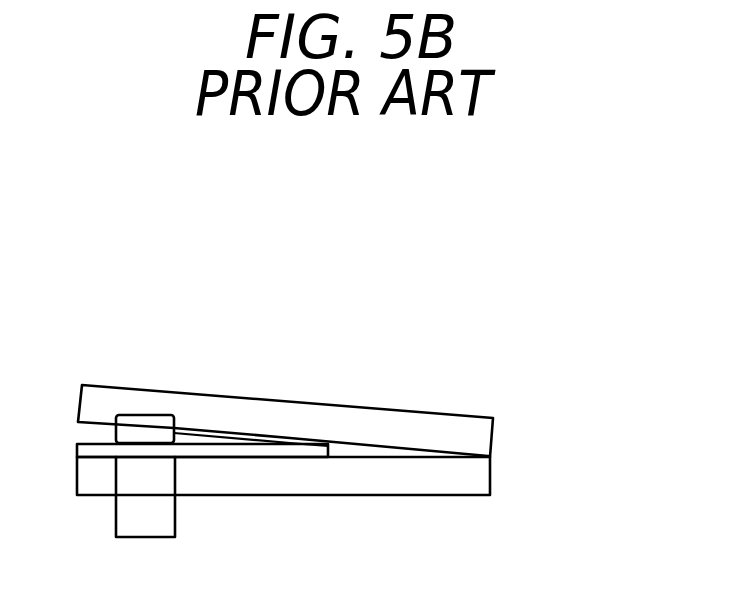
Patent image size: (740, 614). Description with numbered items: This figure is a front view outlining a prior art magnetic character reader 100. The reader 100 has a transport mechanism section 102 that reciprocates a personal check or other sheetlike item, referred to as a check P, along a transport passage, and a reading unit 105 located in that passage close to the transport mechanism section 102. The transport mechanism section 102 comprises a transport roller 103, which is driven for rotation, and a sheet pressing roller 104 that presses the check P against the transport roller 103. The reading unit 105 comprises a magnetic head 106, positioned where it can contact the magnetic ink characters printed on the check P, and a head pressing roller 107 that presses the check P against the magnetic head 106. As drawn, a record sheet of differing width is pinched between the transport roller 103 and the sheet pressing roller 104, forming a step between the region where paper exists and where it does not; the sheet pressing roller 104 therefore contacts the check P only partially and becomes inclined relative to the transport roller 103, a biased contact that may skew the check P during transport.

The magnetic character reader 100 is at (113, 188).
The transport mechanism section 102 is at (588, 390).
The transport roller 103 is at (480, 478).
The sheet pressing roller 104 is at (483, 433).
The reading unit 105 is at (248, 293).
The magnetic head 106 is at (168, 475).
The head pressing roller 107 is at (133, 420).
The check P is at (300, 452).